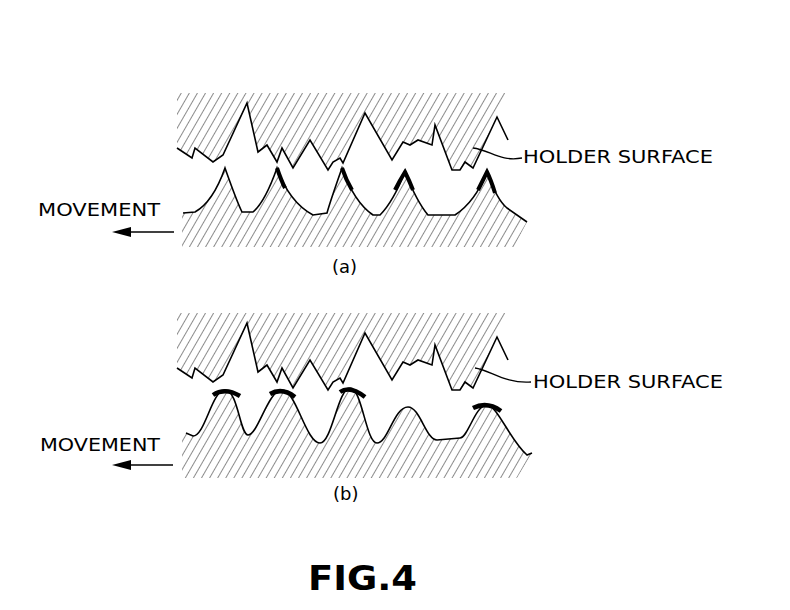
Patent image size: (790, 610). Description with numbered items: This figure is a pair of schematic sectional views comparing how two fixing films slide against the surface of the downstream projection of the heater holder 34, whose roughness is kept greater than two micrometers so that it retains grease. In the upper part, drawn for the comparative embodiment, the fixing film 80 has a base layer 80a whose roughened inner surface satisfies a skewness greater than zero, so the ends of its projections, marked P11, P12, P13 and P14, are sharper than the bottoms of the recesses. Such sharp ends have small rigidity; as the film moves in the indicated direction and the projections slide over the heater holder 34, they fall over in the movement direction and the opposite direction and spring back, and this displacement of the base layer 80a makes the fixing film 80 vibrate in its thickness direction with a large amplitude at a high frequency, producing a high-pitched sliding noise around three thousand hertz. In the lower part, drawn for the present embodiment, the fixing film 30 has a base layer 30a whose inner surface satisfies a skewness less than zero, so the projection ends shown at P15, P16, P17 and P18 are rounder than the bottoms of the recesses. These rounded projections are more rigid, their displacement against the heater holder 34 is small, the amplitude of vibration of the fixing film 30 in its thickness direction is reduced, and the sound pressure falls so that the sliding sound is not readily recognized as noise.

The heater holder 34 is at (492, 100).
The fixing film 80 is at (497, 235).
The base layer 80a is at (502, 218).
The fixing film 30 is at (497, 462).
The base layer 30a is at (505, 437).
The sharp end P11 is at (266, 177).
The sharp end P12 is at (331, 182).
The sharp end P13 is at (392, 180).
The sharp end P14 is at (472, 185).
The rounded end P15 is at (232, 383).
The rounded end P16 is at (270, 399).
The rounded end P17 is at (359, 384).
The rounded end P18 is at (475, 409).